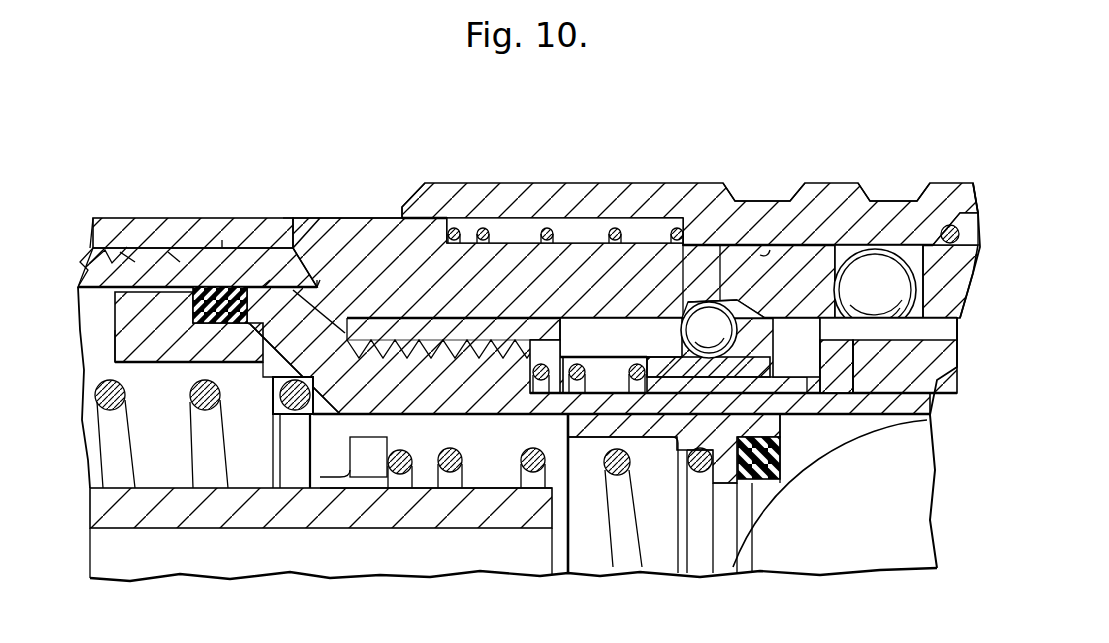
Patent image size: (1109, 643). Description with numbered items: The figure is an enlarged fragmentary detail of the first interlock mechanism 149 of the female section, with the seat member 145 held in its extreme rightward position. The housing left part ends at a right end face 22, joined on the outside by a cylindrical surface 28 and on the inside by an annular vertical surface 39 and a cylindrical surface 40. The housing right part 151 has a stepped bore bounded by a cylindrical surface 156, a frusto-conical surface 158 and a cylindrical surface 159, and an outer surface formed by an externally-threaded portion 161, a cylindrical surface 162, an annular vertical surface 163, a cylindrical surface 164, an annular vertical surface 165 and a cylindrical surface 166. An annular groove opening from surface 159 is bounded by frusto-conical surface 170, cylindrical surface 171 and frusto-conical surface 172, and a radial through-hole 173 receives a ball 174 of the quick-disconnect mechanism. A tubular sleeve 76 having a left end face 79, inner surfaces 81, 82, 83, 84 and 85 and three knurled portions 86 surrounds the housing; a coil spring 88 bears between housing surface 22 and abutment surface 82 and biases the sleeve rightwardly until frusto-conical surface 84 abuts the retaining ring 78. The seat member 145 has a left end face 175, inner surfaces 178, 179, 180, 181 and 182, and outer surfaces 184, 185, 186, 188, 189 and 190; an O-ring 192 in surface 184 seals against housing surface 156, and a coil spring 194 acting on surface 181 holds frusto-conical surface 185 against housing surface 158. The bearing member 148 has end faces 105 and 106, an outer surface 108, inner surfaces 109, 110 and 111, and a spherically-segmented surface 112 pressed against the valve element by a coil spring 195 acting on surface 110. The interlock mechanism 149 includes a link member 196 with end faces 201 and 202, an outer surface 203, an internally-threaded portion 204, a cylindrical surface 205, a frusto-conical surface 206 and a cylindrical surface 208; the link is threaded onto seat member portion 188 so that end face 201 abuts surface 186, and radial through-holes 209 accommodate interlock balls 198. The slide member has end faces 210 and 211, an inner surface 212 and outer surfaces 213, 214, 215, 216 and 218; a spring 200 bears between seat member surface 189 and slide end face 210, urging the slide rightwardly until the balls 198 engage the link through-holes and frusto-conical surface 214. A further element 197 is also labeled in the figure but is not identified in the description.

The right end face 22 is at (300, 240).
The outwardly-facing horizontal cylindrical surface 28 is at (172, 215).
The rightwardly-facing annular vertical surface 39 is at (130, 258).
The inwardly-facing horizontal cylindrical surface 40 is at (178, 258).
The tubular sleeve 76 is at (606, 181).
The annular retaining ring 78 is at (964, 300).
The left end face 79 is at (401, 210).
The inwardly-facing horizontal cylindrical surface 81 is at (641, 216).
The leftwardly-facing annular vertical abutment surface 82 is at (683, 216).
The inwardly-facing horizontal cylindrical surface 83 is at (770, 252).
The inwardly- and rightwardly-facing frusto-conical surface 84 is at (960, 243).
The inwardly-facing horizontal cylindrical surface 85 is at (976, 190).
The knurled portions 86 is at (550, 183).
The coil spring 88 is at (565, 231).
The left end face 105 is at (546, 416).
The right end face 106 is at (784, 449).
The outwardly-facing horizontal cylindrical surface 108 is at (655, 440).
The inwardly-facing horizontal cylindrical surface 109 is at (589, 442).
The leftwardly-facing annular vertical surface 110 is at (690, 482).
The inwardly-facing horizontal cylindrical surface 111 is at (705, 500).
The spherically-segmented surface 112 is at (772, 506).
The seat member 145 is at (110, 345).
The bearing member 148 is at (784, 460).
The first interlock mechanism 149 is at (722, 316).
The housing right part 151 is at (330, 212).
The inwardly-facing horizontal cylindrical surface 156 is at (96, 290).
The inwardly- and leftwardly-facing frusto-conical surface 158 is at (300, 308).
The inwardly-facing horizontal cylindrical surface 159 is at (455, 338).
The externally-threaded portion 161 is at (90, 252).
The outwardly-facing horizontal cylindrical surface 162 is at (222, 246).
The leftwardly-facing annular vertical surface 163 is at (284, 216).
The outwardly-facing horizontal cylindrical surface 164 is at (358, 225).
The rightwardly-facing annular vertical surface 165 is at (458, 225).
The outwardly-facing cylindrical surface 166 is at (530, 242).
The inwardly- and rightwardly-facing frusto-conical surface 170 is at (666, 316).
The inwardly-facing horizontal cylindrical surface 171 is at (742, 316).
The inwardly- and leftwardly-facing frusto-conical surface 172 is at (762, 316).
The radial through-hole 173 is at (847, 244).
The balls 174 is at (862, 287).
The left end face 175 is at (124, 330).
The inwardly-facing horizontal cylindrical surface 178 is at (166, 366).
The leftwardly-facing annular vertical surface 179 is at (266, 372).
The inwardly-facing horizontal cylindrical surface 180 is at (272, 400).
The leftwardly-facing annular vertical surface 181 is at (290, 418).
The inwardly-facing horizontal cylindrical surface 182 is at (431, 416).
The outwardly-facing horizontal cylindrical surface 184 is at (264, 286).
The outwardly- and rightwardly-facing frusto-conical surface 185 is at (328, 288).
The rightwardly-facing annular vertical surface 186 is at (362, 316).
The externally-threaded portion 188 is at (410, 336).
The rightwardly-facing annular vertical surface 189 is at (530, 370).
The outwardly-facing horizontal cylindrical surface 190 is at (601, 390).
The O-ring 192 is at (224, 323).
The coil spring 194 is at (137, 440).
The coil spring 195 is at (520, 461).
The link member 196 is at (490, 316).
The chamber 197 is at (855, 385).
The balls 198 is at (697, 331).
The spring 200 is at (530, 386).
The left end face 201 is at (325, 334).
The right end face 202 is at (790, 318).
The outwardly-facing cylindrical surface 203 is at (525, 316).
The internally-threaded portion 204 is at (360, 352).
The inwardly-facing horizontal cylindrical surface 205 is at (570, 316).
The inwardly- and leftwardly-facing frusto-conical surface 206 is at (582, 350).
The inwardly-facing horizontal cylindrical surface 208 is at (775, 364).
The radial through-holes 209 is at (716, 298).
The left end face 210 is at (632, 355).
The right end face 211 is at (857, 356).
The inwardly-facing horizontal cylindrical surface 212 is at (728, 420).
The outwardly-facing horizontal cylindrical surface 213 is at (660, 314).
The outwardly- and rightwardly-facing frusto-conical surface 214 is at (722, 363).
The outwardly-facing horizontal cylindrical surface 215 is at (790, 436).
The leftwardly-facing annular vertical surface 216 is at (812, 346).
The outwardly-facing horizontal cylindrical surface 218 is at (855, 332).